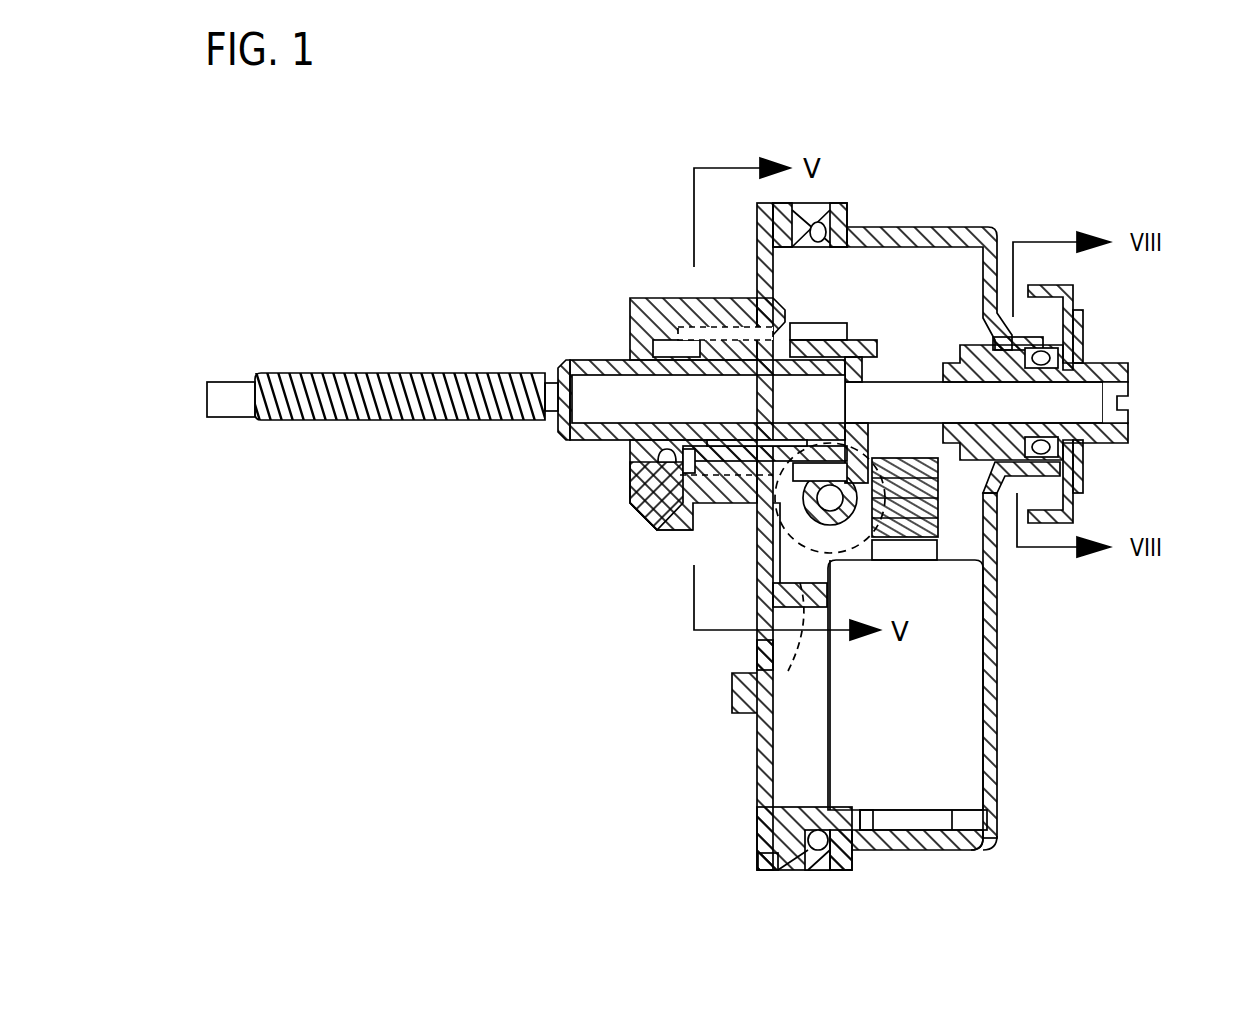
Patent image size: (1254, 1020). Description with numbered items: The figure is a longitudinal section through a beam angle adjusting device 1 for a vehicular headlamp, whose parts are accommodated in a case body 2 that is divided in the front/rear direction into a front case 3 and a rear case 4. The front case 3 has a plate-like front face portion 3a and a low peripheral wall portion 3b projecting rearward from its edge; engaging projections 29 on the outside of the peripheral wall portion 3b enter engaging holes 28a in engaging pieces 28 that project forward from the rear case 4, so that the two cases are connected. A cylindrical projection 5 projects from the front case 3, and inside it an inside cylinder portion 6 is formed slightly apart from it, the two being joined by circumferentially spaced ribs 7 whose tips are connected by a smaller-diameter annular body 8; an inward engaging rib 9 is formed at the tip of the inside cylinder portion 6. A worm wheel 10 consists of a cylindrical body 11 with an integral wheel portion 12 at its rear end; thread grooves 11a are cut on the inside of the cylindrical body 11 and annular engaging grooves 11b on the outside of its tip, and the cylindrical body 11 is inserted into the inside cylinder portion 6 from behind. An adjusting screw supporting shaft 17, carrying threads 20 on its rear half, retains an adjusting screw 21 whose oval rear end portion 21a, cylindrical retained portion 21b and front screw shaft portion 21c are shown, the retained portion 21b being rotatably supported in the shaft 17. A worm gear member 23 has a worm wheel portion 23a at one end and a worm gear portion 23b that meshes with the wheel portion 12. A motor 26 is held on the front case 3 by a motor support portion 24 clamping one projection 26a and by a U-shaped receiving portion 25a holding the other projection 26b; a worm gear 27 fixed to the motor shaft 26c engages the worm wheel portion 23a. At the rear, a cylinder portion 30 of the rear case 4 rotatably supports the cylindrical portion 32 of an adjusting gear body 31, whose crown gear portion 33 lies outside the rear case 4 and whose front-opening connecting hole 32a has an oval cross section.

The beam angle adjusting device 1 is at (942, 206).
The case body 2 is at (965, 852).
The front case 3 is at (757, 765).
The front face portion 3a is at (755, 655).
The peripheral wall portion 3b is at (847, 840).
The rear case 4 is at (998, 755).
The cylindrical projection 5 is at (660, 298).
The inside cylinder portion 6 is at (707, 330).
The ribs 7 is at (630, 302).
The annular body 8 is at (630, 442).
The engaging rib 9 is at (628, 340).
The worm wheel 10 is at (822, 323).
The cylindrical body 11 is at (718, 505).
The thread grooves 11a is at (855, 356).
The engaging grooves 11b is at (643, 493).
The wheel portion 12 is at (850, 327).
The adjusting screw supporting shaft 17 is at (580, 360).
The threads 20 is at (738, 297).
The adjusting screw 21 is at (340, 373).
The rear end portion 21a is at (918, 392).
The retained portion 21b is at (580, 400).
The screw shaft portion 21c is at (297, 421).
The worm gear member 23 is at (833, 522).
The worm wheel portion 23a is at (800, 673).
The worm gear portion 23b is at (832, 558).
The motor support portion 24 is at (775, 565).
The receiving portion 25a is at (870, 812).
The motor 26 is at (950, 707).
The projection 26a is at (940, 578).
The projection 26b is at (995, 822).
The motor shaft 26c is at (990, 555).
The worm gear 27 is at (940, 492).
The engaging pieces 28 is at (765, 203).
The engaging holes 28a is at (820, 203).
The engaging projections 29 is at (790, 203).
The cylinder portion 30 is at (995, 393).
The adjusting gear body 31 is at (1128, 385).
The cylindrical portion 32 is at (1083, 455).
The connecting hole 32a is at (1073, 297).
The crown gear portion 33 is at (1083, 310).